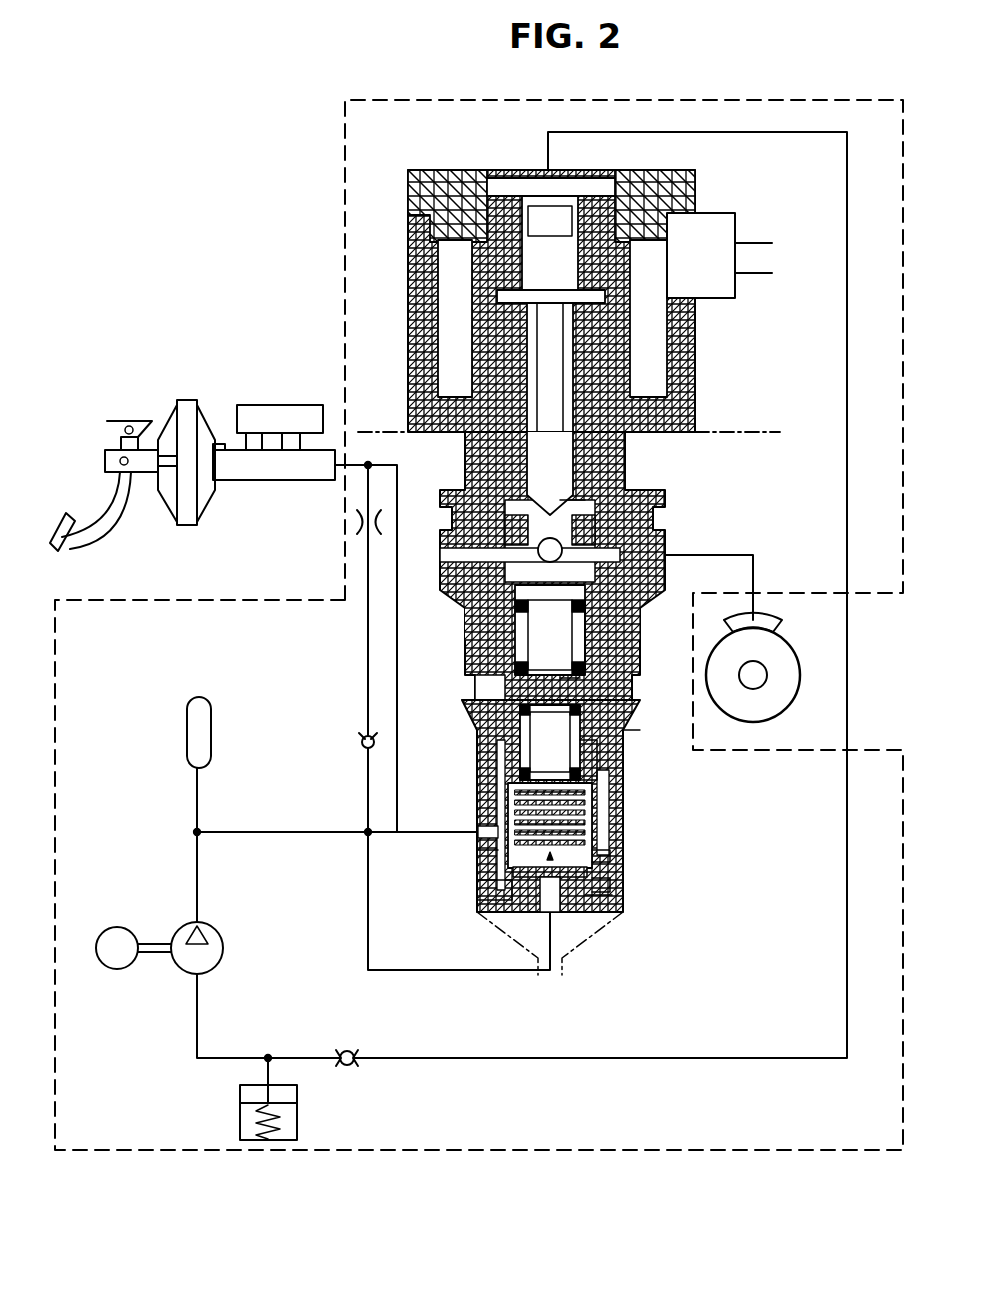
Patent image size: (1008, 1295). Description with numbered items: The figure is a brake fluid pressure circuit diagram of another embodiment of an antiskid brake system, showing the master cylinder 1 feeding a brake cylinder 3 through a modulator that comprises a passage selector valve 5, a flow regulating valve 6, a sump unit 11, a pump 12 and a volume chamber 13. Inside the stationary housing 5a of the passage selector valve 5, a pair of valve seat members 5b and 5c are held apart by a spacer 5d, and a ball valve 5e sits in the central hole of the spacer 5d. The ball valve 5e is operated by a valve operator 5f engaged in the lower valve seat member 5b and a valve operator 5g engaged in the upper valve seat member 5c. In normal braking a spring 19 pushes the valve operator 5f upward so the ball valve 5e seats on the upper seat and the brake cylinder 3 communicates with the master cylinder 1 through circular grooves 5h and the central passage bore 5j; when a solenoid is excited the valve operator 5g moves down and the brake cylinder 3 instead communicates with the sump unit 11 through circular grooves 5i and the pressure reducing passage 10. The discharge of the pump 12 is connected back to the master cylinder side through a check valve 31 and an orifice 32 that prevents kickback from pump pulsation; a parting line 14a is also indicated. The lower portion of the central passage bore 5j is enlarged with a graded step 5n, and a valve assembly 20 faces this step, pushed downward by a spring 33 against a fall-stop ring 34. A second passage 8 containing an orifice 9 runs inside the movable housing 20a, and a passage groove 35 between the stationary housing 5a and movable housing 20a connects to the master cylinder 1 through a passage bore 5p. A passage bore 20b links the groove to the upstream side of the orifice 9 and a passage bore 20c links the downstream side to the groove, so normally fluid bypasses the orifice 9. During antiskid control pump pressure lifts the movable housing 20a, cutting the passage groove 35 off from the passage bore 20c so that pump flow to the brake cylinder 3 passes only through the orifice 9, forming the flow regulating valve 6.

The master cylinder 1 is at (254, 468).
The brake cylinder 3 is at (769, 626).
The passage selector valve 5 is at (612, 571).
The stationary housing 5a is at (640, 506).
The lower valve seat member 5b is at (500, 578).
The upper valve seat member 5c is at (605, 490).
The spacer 5d is at (512, 540).
The ball valve 5e is at (617, 615).
The valve operator 5f is at (485, 615).
The valve operator 5g is at (590, 540).
The circular grooves 5h is at (550, 630).
The circular grooves 5i is at (558, 354).
The central passage bore 5j is at (578, 686).
The graded step 5n is at (626, 733).
The passage bore 5p is at (480, 850).
The flow regulating valve 6 is at (622, 852).
The second passage 8 is at (622, 880).
The orifice 9 is at (541, 912).
The pressure reducing passage 10 is at (848, 482).
The sump unit 11 is at (298, 1126).
The pump 12 is at (223, 949).
The volume chamber 13 is at (188, 712).
The parting line 14a is at (735, 432).
The spring 19 is at (590, 652).
The valve assembly 20 is at (490, 790).
The movable housing 20a is at (605, 760).
The passage bore 20b is at (480, 870).
The passage bore 20c is at (520, 770).
The check valve 31 is at (358, 742).
The orifice 32 is at (353, 522).
The spring 33 is at (497, 688).
The fall-stop ring 34 is at (605, 905).
The passage groove 35 is at (478, 814).